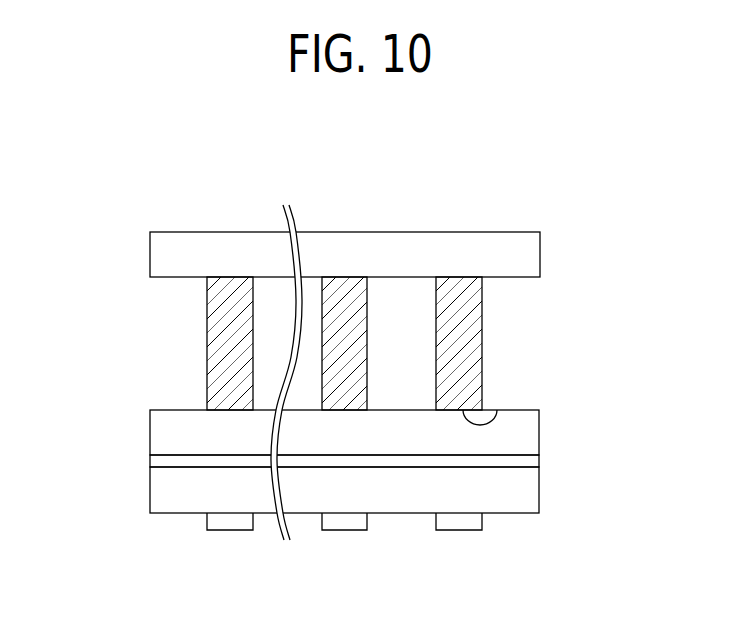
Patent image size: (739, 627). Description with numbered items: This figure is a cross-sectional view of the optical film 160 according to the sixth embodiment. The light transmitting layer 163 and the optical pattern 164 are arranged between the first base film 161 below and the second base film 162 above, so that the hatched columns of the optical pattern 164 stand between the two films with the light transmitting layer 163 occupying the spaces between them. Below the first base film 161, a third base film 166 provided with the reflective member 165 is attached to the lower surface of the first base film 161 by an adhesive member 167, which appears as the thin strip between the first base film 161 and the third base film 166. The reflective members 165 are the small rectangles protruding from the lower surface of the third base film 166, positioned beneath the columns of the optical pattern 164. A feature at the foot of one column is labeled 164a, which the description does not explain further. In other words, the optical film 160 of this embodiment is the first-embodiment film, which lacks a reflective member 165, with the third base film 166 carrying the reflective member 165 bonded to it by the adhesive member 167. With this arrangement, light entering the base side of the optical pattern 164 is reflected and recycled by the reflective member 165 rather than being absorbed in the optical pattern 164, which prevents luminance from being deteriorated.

The optical film 160 is at (87, 203).
The first base film 161 is at (528, 432).
The second base film 162 is at (530, 253).
The light transmitting layer 163 is at (403, 305).
The optical pattern 164 is at (477, 328).
The pillar base portion 164a is at (497, 410).
The reflective member 165 is at (460, 523).
The third base film 166 is at (528, 488).
The adhesive member 167 is at (528, 460).